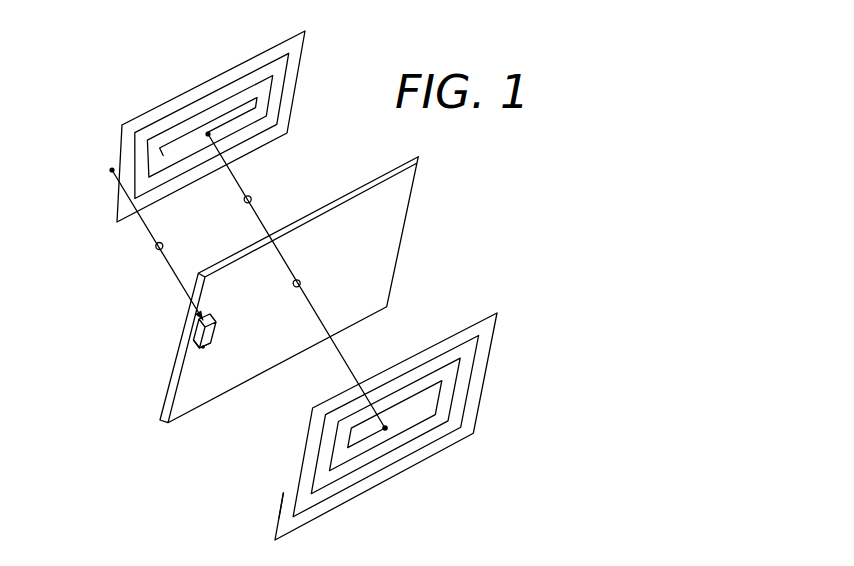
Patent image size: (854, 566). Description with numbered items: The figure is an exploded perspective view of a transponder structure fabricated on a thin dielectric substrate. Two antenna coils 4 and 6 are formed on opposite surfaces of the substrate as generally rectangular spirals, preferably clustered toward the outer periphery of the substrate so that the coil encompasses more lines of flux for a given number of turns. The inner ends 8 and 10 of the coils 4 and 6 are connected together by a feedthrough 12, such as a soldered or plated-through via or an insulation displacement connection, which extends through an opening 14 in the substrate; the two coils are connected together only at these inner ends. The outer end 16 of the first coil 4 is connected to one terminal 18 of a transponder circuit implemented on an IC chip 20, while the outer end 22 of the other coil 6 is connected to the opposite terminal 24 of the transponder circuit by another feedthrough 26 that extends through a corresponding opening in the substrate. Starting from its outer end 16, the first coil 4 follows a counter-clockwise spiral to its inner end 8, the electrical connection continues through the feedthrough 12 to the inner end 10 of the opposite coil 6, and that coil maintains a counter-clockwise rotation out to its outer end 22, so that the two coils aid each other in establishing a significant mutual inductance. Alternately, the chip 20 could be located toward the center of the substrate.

The antenna coil 4 is at (488, 371).
The antenna coil 6 is at (299, 80).
The inner end 8 is at (386, 425).
The inner end 10 is at (210, 136).
The feedthrough 12 is at (244, 199).
The opening 14 is at (301, 284).
The outer end 16 is at (280, 494).
The terminal 18 is at (203, 347).
The IC chip 20 is at (216, 323).
The outer end 22 is at (112, 170).
The terminal 24 is at (198, 318).
The feedthrough 26 is at (156, 247).